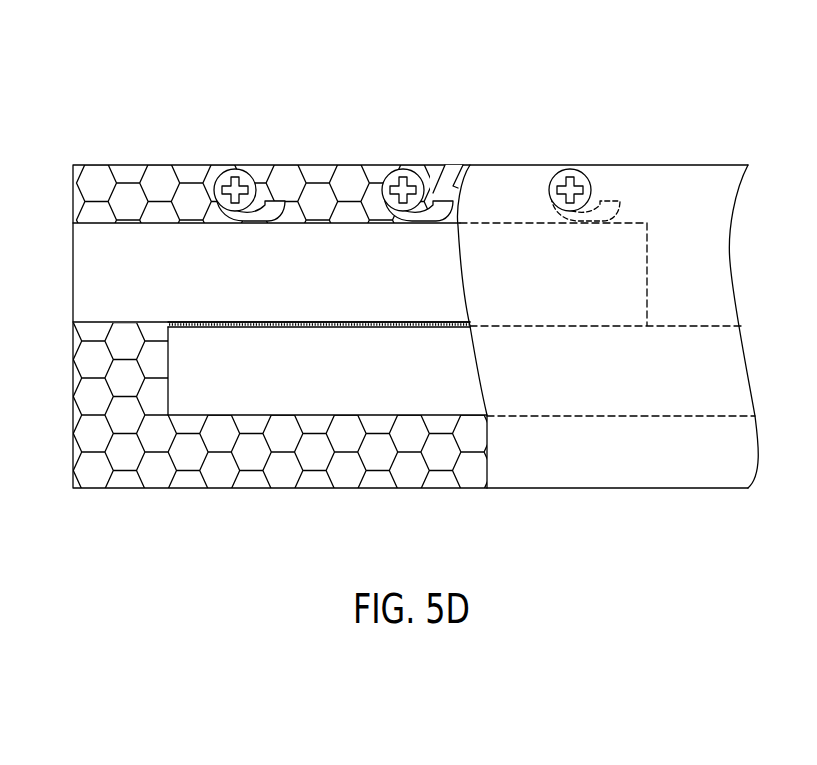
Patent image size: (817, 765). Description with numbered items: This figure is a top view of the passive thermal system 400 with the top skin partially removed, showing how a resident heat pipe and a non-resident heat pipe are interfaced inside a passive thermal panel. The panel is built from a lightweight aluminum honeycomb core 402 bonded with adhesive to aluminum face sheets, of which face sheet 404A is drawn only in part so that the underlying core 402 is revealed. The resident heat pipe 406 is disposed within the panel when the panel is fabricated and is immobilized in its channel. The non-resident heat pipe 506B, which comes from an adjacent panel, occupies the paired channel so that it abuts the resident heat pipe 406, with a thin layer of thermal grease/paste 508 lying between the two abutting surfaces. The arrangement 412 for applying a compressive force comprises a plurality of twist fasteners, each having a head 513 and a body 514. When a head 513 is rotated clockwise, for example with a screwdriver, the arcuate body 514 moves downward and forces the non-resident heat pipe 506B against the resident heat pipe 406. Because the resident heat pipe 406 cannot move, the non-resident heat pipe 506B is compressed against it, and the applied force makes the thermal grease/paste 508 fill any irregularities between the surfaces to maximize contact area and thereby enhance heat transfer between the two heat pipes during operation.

The passive thermal system 400 is at (152, 113).
The core 402 is at (80, 398).
The face sheet 404A is at (718, 263).
The heat pipe 406 is at (342, 332).
The arrangement for applying a compressive force 412 is at (392, 152).
The non-resident heat pipe 506B is at (80, 272).
The thermal grease/paste 508 is at (257, 322).
The head 513 is at (414, 166).
The body 514 is at (457, 166).